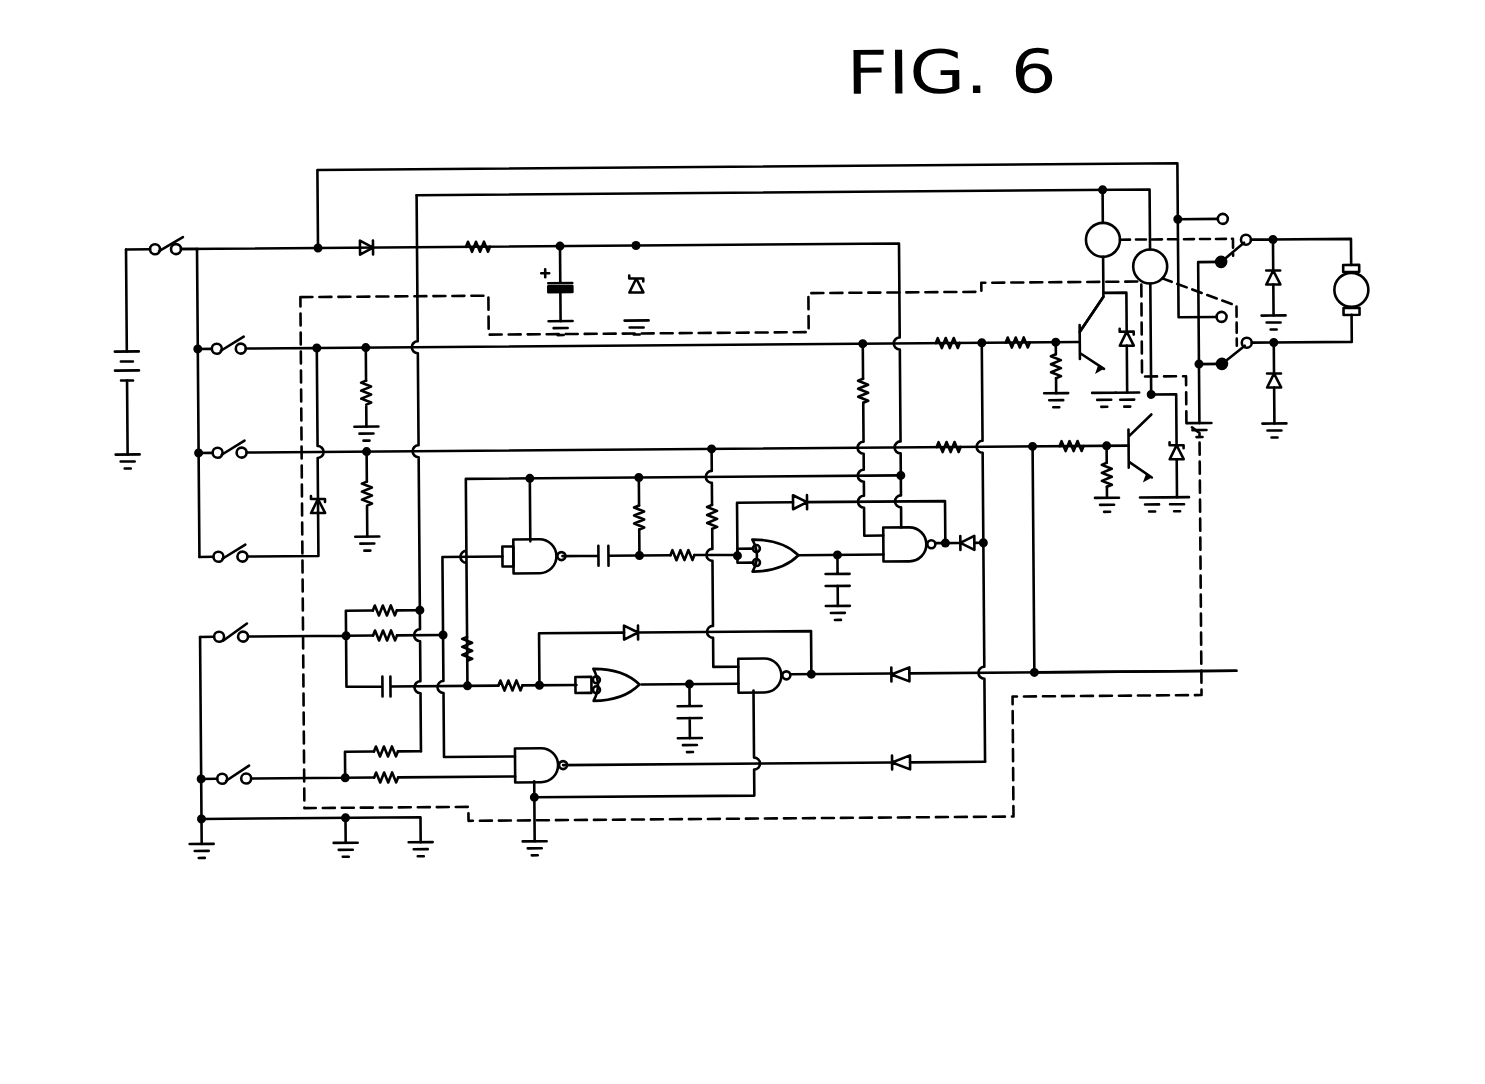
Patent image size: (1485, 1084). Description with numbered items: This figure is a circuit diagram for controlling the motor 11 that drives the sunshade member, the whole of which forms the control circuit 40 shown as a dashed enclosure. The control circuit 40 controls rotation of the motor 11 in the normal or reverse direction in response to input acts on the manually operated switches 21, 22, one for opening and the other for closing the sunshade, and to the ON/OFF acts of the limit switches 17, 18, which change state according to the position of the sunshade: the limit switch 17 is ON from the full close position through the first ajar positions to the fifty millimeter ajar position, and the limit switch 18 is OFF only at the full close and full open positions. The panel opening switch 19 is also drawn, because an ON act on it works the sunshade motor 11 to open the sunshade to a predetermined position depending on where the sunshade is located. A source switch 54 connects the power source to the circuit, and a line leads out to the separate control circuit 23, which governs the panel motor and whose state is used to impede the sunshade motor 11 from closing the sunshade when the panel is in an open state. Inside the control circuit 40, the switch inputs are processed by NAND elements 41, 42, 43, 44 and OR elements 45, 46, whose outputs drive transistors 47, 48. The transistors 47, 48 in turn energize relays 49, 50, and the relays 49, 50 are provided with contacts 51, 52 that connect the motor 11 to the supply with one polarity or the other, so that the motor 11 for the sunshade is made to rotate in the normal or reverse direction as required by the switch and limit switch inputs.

The motor 11 is at (1372, 293).
The limit switch 17 is at (233, 640).
The limit switch 18 is at (241, 764).
The switch 19 is at (238, 542).
The switch 21 is at (238, 334).
The switch 22 is at (238, 438).
The control circuit 23 is at (1241, 671).
The control circuit 40 is at (752, 819).
The NAND element 41 is at (549, 550).
The NAND element 42 is at (907, 566).
The NAND element 43 is at (782, 690).
The NAND element 44 is at (563, 752).
The OR element 45 is at (790, 573).
The OR element 46 is at (631, 680).
The transistor 47 is at (1081, 340).
The transistor 48 is at (1141, 474).
The relay 49 is at (1088, 243).
The relay 50 is at (1147, 253).
The contact 51 is at (1240, 245).
The contact 52 is at (1240, 360).
The source switch 54 is at (176, 239).